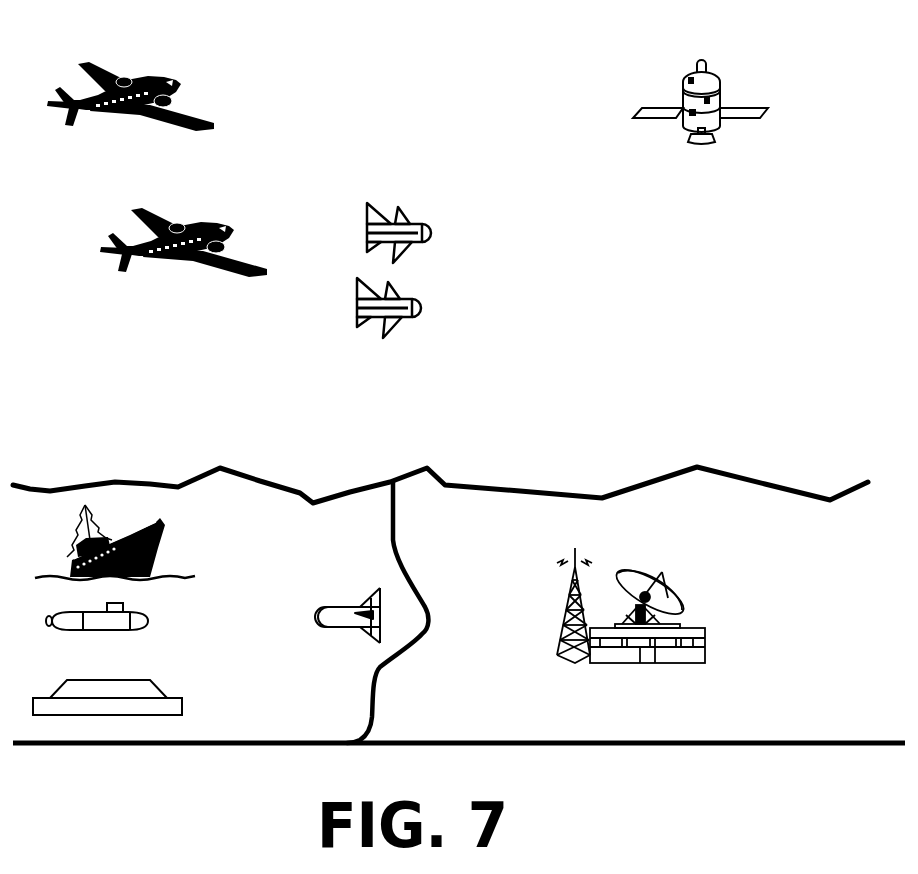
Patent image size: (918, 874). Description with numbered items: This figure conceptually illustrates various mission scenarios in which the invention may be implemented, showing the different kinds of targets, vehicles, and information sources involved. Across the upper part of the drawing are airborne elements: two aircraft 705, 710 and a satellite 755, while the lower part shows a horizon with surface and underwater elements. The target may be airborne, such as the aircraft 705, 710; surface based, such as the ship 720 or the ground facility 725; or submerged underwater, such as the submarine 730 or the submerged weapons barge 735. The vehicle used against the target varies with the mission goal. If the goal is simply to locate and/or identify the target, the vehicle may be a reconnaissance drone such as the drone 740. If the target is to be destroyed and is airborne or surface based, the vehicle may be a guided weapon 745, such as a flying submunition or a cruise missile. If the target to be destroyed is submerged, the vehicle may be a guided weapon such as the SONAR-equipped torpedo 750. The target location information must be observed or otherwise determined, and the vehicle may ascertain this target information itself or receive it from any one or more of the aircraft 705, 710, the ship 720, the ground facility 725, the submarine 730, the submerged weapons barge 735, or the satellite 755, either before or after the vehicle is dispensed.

The aircraft 705 is at (162, 76).
The aircraft 710 is at (215, 222).
The ship 720 is at (144, 542).
The ground facility 725 is at (660, 598).
The submarine 730 is at (146, 604).
The submerged weapons barge 735 is at (152, 678).
The drone 740 is at (438, 215).
The guided weapon 745 is at (431, 292).
The SONAR-equipped torpedo 750 is at (333, 591).
The satellite 755 is at (726, 81).